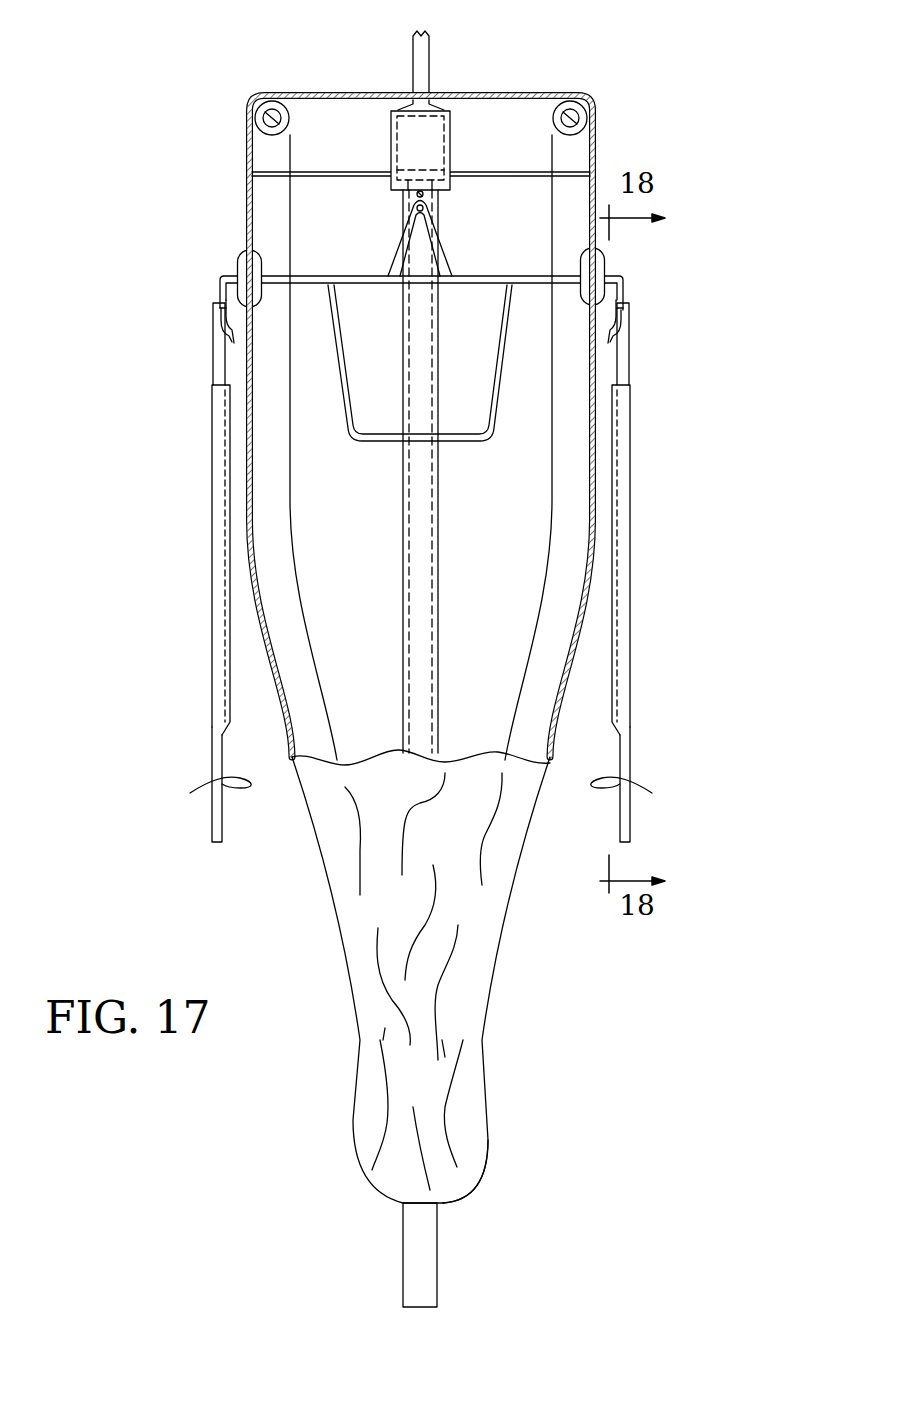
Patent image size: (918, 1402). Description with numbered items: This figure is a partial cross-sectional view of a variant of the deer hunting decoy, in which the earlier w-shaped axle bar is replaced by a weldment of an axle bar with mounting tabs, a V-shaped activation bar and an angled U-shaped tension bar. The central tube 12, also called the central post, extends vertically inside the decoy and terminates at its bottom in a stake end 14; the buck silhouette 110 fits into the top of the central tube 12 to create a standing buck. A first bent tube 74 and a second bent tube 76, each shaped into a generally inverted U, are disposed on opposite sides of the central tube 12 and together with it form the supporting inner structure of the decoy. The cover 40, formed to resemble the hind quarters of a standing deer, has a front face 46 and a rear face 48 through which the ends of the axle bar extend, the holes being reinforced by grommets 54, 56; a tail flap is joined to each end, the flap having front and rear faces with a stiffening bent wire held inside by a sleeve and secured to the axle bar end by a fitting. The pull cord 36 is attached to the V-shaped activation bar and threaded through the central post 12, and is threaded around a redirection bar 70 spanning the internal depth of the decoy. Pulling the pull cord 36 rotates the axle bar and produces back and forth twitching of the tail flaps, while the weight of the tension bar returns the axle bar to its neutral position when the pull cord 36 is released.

The central tube 12 is at (439, 578).
The stake end 14 is at (438, 1248).
The pull cord 36 is at (438, 196).
The cover 40 is at (503, 893).
The front face 46 is at (490, 958).
The rear face 48 is at (332, 880).
The grommet 54 is at (625, 278).
The grommet 56 is at (243, 262).
The redirection bar 70 is at (572, 170).
The first bent tube 74 is at (262, 95).
The second bent tube 76 is at (584, 92).
The buck silhouette 110 is at (412, 53).